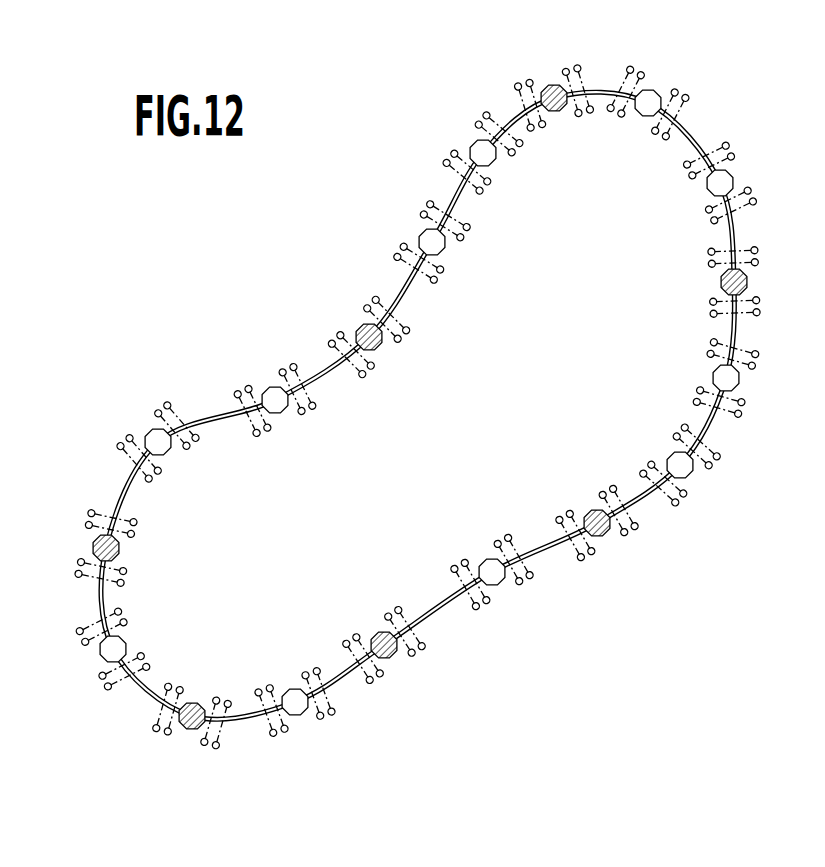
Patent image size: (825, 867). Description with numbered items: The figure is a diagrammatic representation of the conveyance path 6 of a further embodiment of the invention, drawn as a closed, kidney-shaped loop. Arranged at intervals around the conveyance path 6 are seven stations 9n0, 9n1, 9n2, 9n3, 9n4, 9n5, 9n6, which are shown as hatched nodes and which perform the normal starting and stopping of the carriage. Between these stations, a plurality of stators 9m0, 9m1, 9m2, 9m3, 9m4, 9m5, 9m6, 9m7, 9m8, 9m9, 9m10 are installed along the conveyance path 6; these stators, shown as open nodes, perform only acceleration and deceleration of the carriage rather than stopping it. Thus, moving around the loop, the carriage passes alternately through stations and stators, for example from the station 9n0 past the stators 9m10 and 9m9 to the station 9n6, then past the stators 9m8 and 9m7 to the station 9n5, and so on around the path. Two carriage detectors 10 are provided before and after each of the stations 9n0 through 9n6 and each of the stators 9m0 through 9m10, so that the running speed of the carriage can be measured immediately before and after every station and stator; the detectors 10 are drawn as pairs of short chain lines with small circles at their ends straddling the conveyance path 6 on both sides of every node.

The conveyance path 6 is at (693, 130).
The carriage detectors 10 is at (443, 283).
The station 9n0 is at (552, 84).
The station 9n1 is at (361, 322).
The station 9n2 is at (92, 549).
The station 9n3 is at (191, 731).
The station 9n4 is at (396, 655).
The station 9n5 is at (605, 536).
The station 9n6 is at (748, 282).
The stator 9m0 is at (480, 142).
The stator 9m1 is at (424, 230).
The stator 9m2 is at (271, 388).
The stator 9m3 is at (152, 430).
The stator 9m4 is at (100, 653).
The stator 9m5 is at (301, 714).
The stator 9m6 is at (499, 585).
The stator 9m7 is at (690, 470).
The stator 9m8 is at (740, 380).
The stator 9m9 is at (734, 183).
The stator 9m10 is at (651, 89).